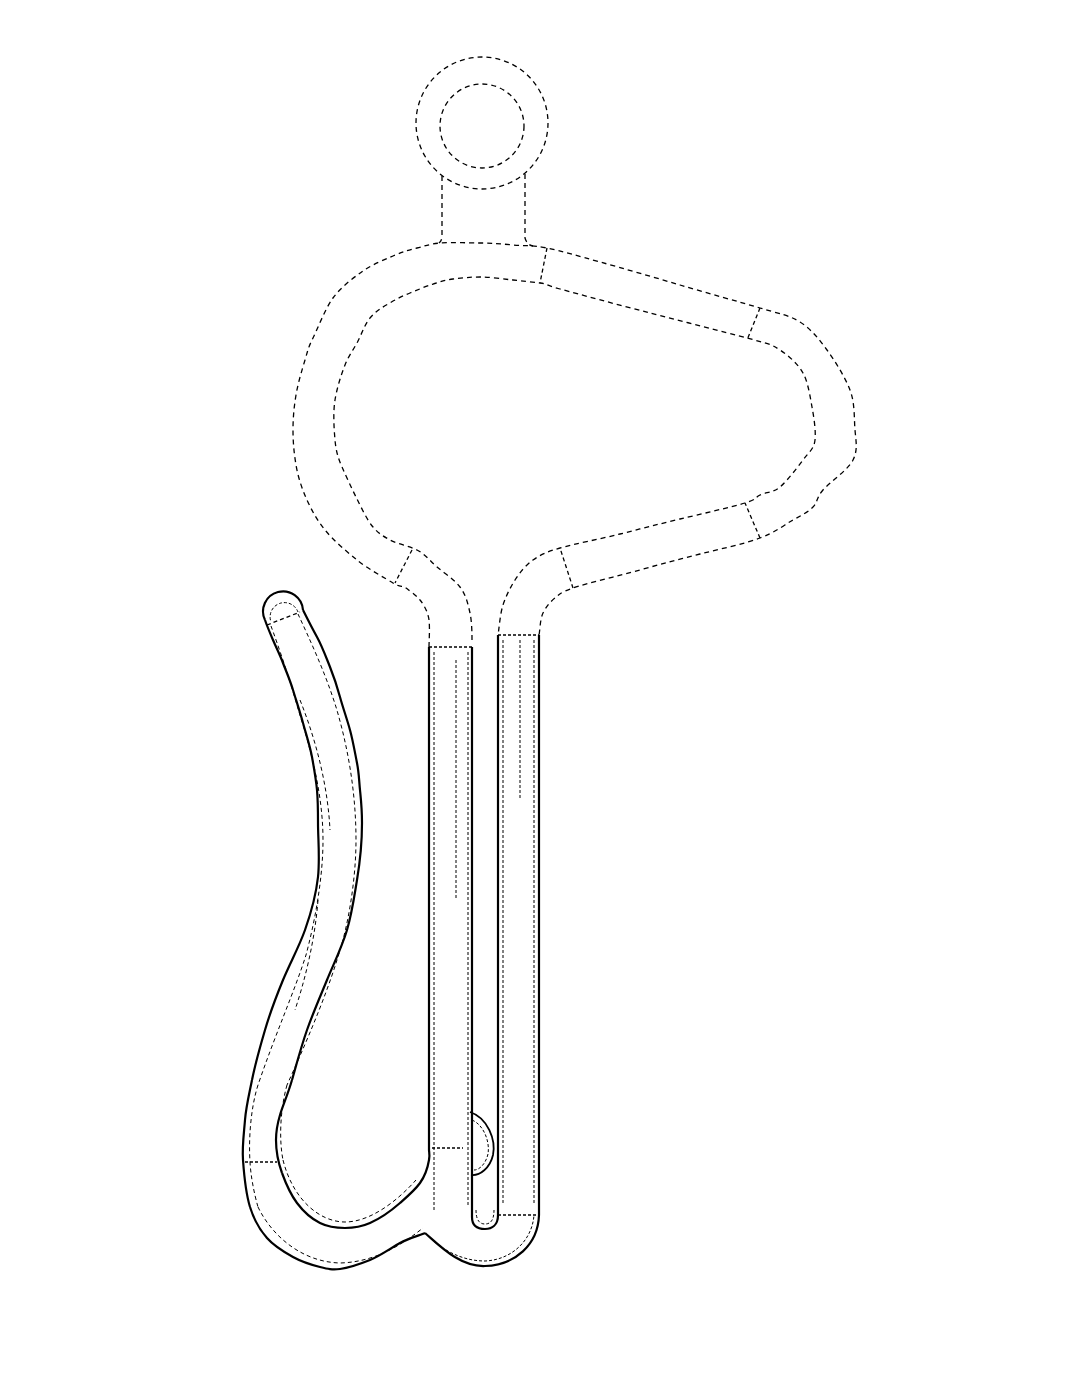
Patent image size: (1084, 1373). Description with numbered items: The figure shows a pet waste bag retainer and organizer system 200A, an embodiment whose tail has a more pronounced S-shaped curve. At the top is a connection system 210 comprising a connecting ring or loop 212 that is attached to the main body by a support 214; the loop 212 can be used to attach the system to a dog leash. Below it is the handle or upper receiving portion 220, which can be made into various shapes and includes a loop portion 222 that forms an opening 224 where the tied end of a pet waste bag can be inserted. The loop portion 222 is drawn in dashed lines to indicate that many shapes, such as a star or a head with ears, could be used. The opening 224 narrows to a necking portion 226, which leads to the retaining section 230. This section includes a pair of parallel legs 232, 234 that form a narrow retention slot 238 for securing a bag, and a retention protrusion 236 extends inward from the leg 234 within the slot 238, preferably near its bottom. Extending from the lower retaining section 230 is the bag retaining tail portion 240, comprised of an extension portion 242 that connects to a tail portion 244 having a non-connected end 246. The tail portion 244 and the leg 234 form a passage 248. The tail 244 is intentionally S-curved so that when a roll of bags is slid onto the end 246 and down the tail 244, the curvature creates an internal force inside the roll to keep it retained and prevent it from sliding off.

The pet waste bag retainer and organizer system 200A is at (555, 26).
The connection system 210 is at (372, 150).
The connecting ring or loop 212 is at (543, 135).
The support 214 is at (517, 223).
The handle or upper portion or receiving portion 220 is at (258, 455).
The loop portion 222 is at (690, 302).
The opening 224 is at (740, 400).
The necking portion 226 is at (487, 602).
The retaining section 230 is at (583, 985).
The leg 232 is at (523, 730).
The leg 234 is at (453, 932).
The retention protrusion 236 is at (487, 1145).
The retention slot 238 is at (487, 820).
The bag retaining tail portion 240 is at (210, 1014).
The extension portion 242 is at (330, 1247).
The tail portion 244 is at (322, 940).
The non-connected end 246 is at (278, 610).
The passage 248 is at (322, 1134).